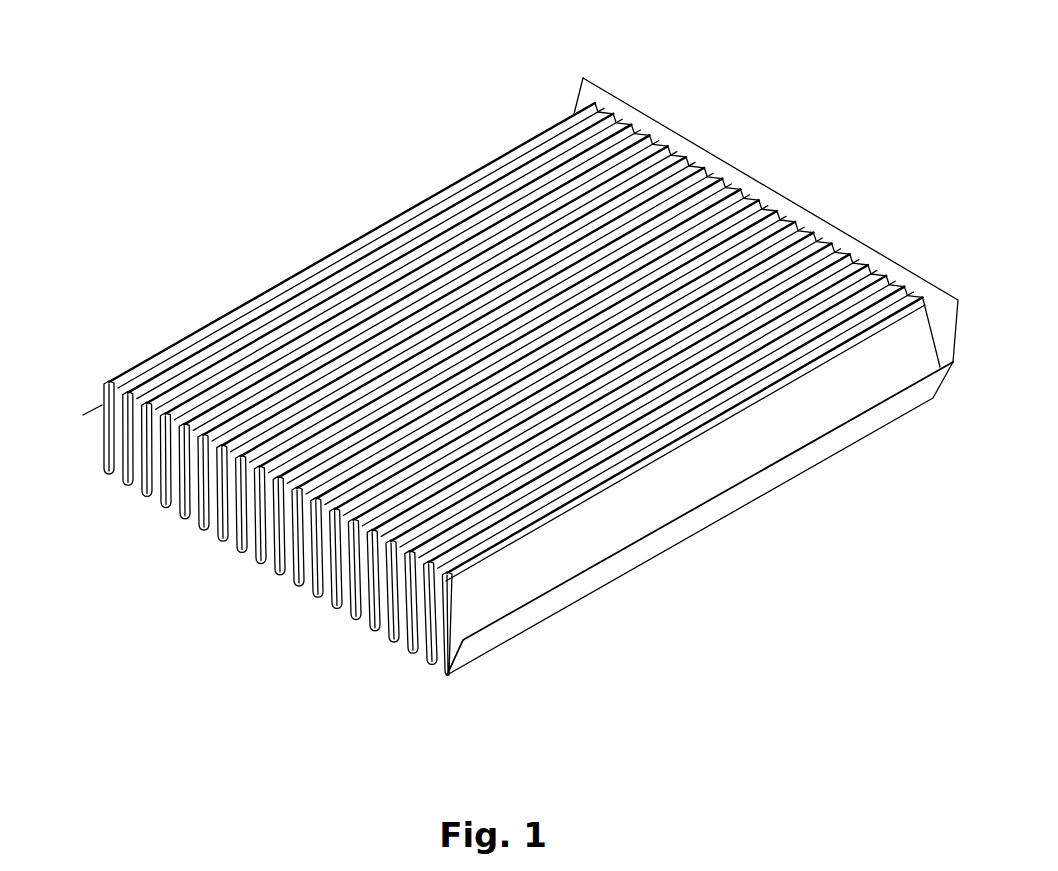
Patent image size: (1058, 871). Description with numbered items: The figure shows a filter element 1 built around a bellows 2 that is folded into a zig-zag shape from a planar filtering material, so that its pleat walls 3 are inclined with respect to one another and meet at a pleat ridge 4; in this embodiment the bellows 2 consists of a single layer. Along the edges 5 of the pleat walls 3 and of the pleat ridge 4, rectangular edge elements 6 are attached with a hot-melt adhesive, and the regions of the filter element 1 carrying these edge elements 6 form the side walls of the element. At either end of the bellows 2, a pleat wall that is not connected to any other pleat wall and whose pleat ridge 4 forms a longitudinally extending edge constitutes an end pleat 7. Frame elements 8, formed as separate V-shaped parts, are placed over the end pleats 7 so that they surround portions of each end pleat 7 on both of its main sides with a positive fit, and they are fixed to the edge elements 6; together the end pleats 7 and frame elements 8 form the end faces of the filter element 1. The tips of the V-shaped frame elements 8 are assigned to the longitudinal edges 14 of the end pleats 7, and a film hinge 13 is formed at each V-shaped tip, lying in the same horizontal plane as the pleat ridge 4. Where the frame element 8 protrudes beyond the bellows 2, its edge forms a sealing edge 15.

The filter element 1 is at (283, 132).
The bellows 2 is at (490, 243).
The pleat walls 3 is at (718, 190).
The pleat ridge 4 is at (665, 143).
The edges 5 is at (867, 262).
The edge elements 6 is at (797, 218).
The end pleats 7 is at (698, 470).
The frame elements 8 is at (878, 425).
The film hinge 13 is at (445, 673).
The longitudinal edges 14 is at (447, 672).
The sealing edge 15 is at (908, 383).